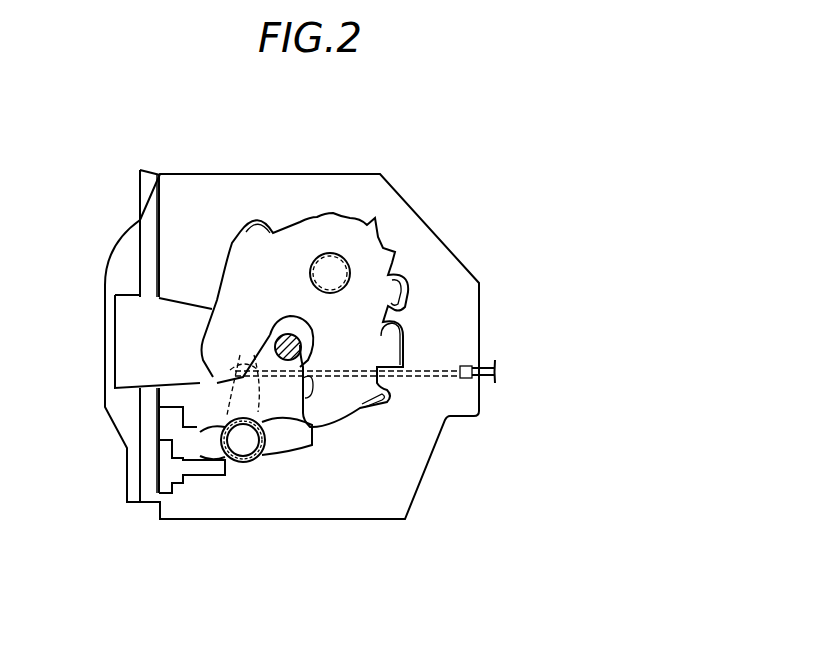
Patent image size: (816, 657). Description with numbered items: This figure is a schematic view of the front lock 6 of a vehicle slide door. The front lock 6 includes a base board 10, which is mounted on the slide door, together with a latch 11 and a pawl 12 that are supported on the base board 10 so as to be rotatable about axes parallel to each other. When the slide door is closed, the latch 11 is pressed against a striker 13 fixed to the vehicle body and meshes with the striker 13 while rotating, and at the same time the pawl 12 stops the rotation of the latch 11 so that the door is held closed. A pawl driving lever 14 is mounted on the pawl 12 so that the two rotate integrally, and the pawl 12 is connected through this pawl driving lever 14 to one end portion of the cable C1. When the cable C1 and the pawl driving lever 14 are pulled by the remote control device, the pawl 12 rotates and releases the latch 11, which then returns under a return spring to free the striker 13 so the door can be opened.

The front lock 6 is at (406, 153).
The base board 10 is at (192, 510).
The latch 11 is at (300, 222).
The pawl 12 is at (314, 445).
The striker 13 is at (308, 347).
The pawl driving lever 14 is at (241, 360).
The cable C1 is at (430, 374).